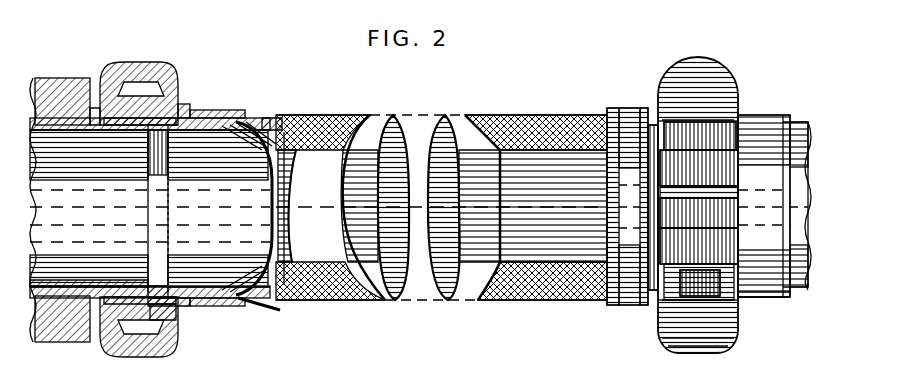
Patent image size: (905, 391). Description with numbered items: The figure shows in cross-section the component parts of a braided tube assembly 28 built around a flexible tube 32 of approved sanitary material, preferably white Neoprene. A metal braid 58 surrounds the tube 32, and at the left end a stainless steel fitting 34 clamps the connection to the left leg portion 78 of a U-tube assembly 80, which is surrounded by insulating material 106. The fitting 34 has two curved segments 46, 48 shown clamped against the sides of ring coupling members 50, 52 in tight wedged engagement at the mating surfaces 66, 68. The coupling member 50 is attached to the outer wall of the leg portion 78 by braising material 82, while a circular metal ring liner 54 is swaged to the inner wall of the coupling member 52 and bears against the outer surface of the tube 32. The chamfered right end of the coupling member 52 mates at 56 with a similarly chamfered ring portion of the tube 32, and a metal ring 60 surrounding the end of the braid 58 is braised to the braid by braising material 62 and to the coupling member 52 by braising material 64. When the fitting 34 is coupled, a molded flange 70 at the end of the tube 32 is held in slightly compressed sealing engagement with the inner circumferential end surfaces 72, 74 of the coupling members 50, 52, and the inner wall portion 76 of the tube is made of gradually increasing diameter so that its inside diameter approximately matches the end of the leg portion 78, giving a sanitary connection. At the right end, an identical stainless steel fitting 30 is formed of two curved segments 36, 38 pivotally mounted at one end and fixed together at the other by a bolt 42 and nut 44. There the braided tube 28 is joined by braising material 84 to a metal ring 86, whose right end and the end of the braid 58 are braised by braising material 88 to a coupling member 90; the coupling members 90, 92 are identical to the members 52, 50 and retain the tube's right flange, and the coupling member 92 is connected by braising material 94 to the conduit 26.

The conduit 26 is at (800, 120).
The braided tube assembly 28 is at (505, 106).
The stainless steel fitting 30 is at (716, 56).
The tube 32 is at (284, 120).
The stainless steel fitting 34 is at (166, 58).
The curved segment 36 is at (714, 82).
The curved segment 38 is at (686, 344).
The bolt 42 is at (722, 134).
The nut 44 is at (682, 282).
The curved segment 46 is at (146, 70).
The curved segment 48 is at (145, 345).
The ring coupling member 50 is at (95, 124).
The ring coupling member 52 is at (212, 117).
The circular metal ring liner 54 is at (185, 300).
The mating surface-to-surface contact 56 is at (262, 120).
The metal braid 58 is at (275, 120).
The metal ring 60 is at (237, 118).
The braising material 62 is at (234, 304).
The braising material 64 is at (202, 307).
The mating surface 66 is at (108, 320).
The mating surface 68 is at (178, 330).
The molded flange 70 is at (149, 286).
The inner circumferential end surface 72 is at (111, 105).
The inner circumferential end surface 74 is at (183, 118).
The inner wall portion 76 is at (162, 284).
The left leg portion 78 is at (40, 118).
The U-tube assembly 80 is at (96, 282).
The braising material 82 is at (50, 118).
The braising material 84 is at (608, 112).
The metal ring 86 is at (626, 112).
The braising material 88 is at (648, 115).
The coupling member 90 is at (656, 175).
The coupling member 92 is at (766, 298).
The braising material 94 is at (790, 292).
The insulating material 106 is at (60, 328).